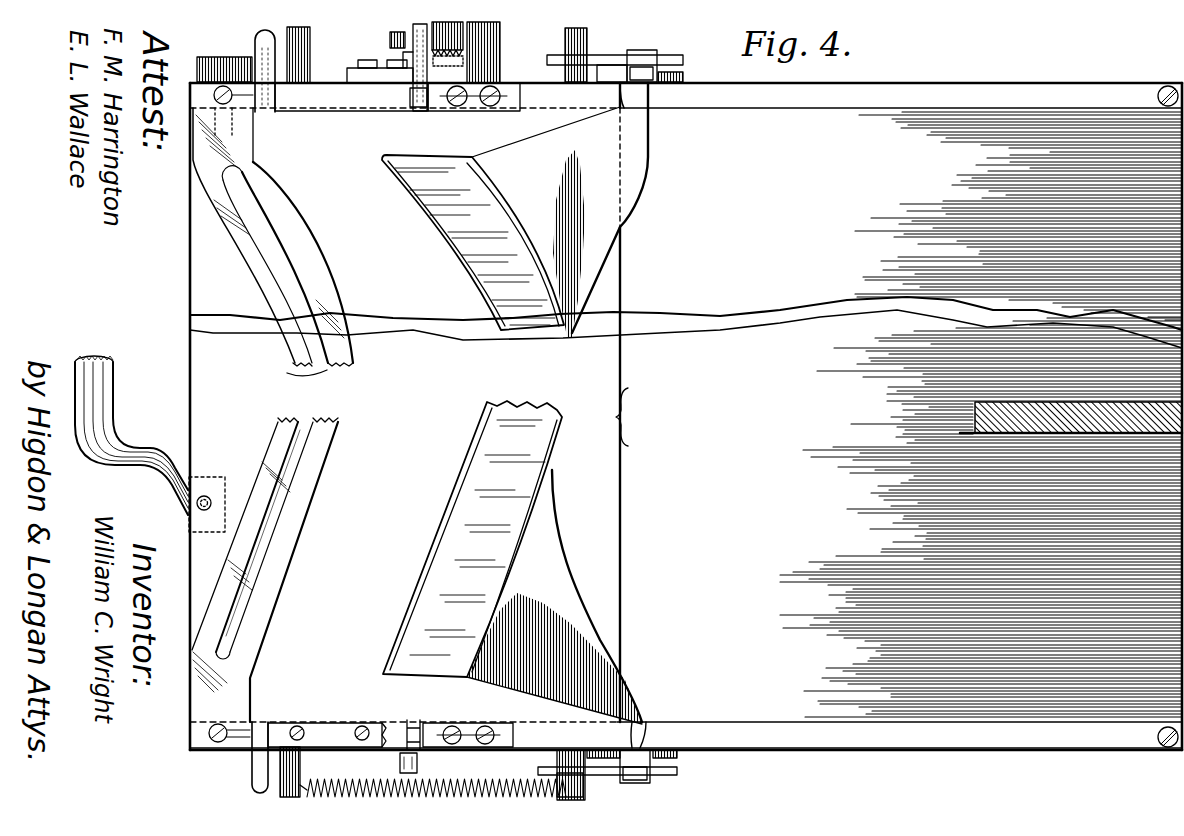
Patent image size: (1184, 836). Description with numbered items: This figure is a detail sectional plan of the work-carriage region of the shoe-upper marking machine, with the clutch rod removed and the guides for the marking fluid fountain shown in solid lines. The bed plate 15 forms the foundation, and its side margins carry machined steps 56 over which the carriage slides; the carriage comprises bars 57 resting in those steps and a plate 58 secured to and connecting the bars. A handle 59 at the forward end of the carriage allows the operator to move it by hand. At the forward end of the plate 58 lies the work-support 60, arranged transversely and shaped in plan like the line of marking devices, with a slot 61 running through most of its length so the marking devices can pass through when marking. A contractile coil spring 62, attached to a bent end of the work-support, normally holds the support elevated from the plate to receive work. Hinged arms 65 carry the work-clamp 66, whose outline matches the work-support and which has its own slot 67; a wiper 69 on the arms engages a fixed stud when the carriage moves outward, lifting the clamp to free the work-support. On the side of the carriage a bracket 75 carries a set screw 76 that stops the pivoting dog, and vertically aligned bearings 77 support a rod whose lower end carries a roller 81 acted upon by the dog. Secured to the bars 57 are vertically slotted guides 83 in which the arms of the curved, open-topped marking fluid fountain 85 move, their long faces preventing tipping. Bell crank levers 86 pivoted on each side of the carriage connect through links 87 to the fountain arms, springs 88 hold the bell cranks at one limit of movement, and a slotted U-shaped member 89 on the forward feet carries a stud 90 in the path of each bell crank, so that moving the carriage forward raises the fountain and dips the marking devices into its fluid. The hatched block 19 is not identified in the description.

The bed plate 15 is at (756, 573).
The block 19 is at (935, 446).
The machined steps 56 is at (848, 112).
The bars 57 is at (906, 93).
The plate 58 is at (277, 353).
The handle 59 is at (98, 405).
The work-support 60 is at (346, 372).
The slot 61 is at (327, 420).
The contractile coil spring 62 is at (227, 61).
The arm 65 is at (392, 86).
The work-clamp 66 is at (309, 493).
The slot 67 is at (467, 114).
The wiper 69 is at (350, 730).
The bracket 75 is at (412, 25).
The set screw 76 is at (392, 44).
The bearings 77 is at (503, 36).
The roller 81 is at (437, 48).
The slotted guides 83 is at (641, 78).
The marking fluid fountain 85 is at (617, 416).
The bell crank levers 86 is at (612, 57).
The links 87 is at (673, 63).
The springs 88 is at (466, 776).
The slotted U-shaped member 89 is at (307, 80).
The stud 90 is at (401, 763).